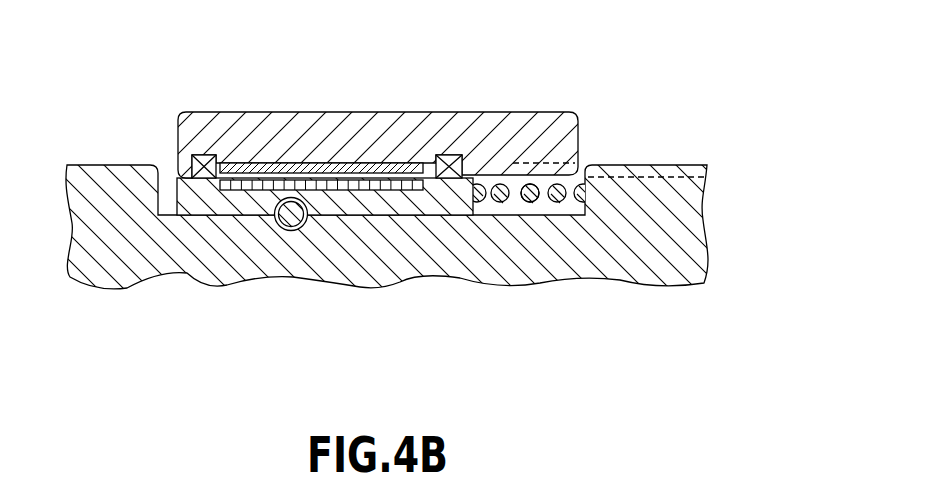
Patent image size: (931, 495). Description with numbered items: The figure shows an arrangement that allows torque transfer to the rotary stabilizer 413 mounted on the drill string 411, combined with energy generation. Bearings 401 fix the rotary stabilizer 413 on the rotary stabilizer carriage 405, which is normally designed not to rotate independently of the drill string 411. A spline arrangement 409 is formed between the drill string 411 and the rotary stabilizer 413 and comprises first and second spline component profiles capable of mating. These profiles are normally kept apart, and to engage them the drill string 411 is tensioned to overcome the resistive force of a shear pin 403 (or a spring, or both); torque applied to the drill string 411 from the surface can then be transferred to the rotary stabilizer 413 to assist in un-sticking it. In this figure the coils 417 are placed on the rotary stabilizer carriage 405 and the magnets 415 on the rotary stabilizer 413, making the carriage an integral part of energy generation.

The bearings 401 is at (194, 162).
The shear pin 403 is at (292, 232).
The rotary stabilizer carriage 405 is at (428, 202).
The spline arrangement 409 is at (608, 177).
The drill string 411 is at (685, 228).
The rotary stabilizer 413 is at (497, 128).
The magnets 415 is at (262, 165).
The coils 417 is at (394, 187).